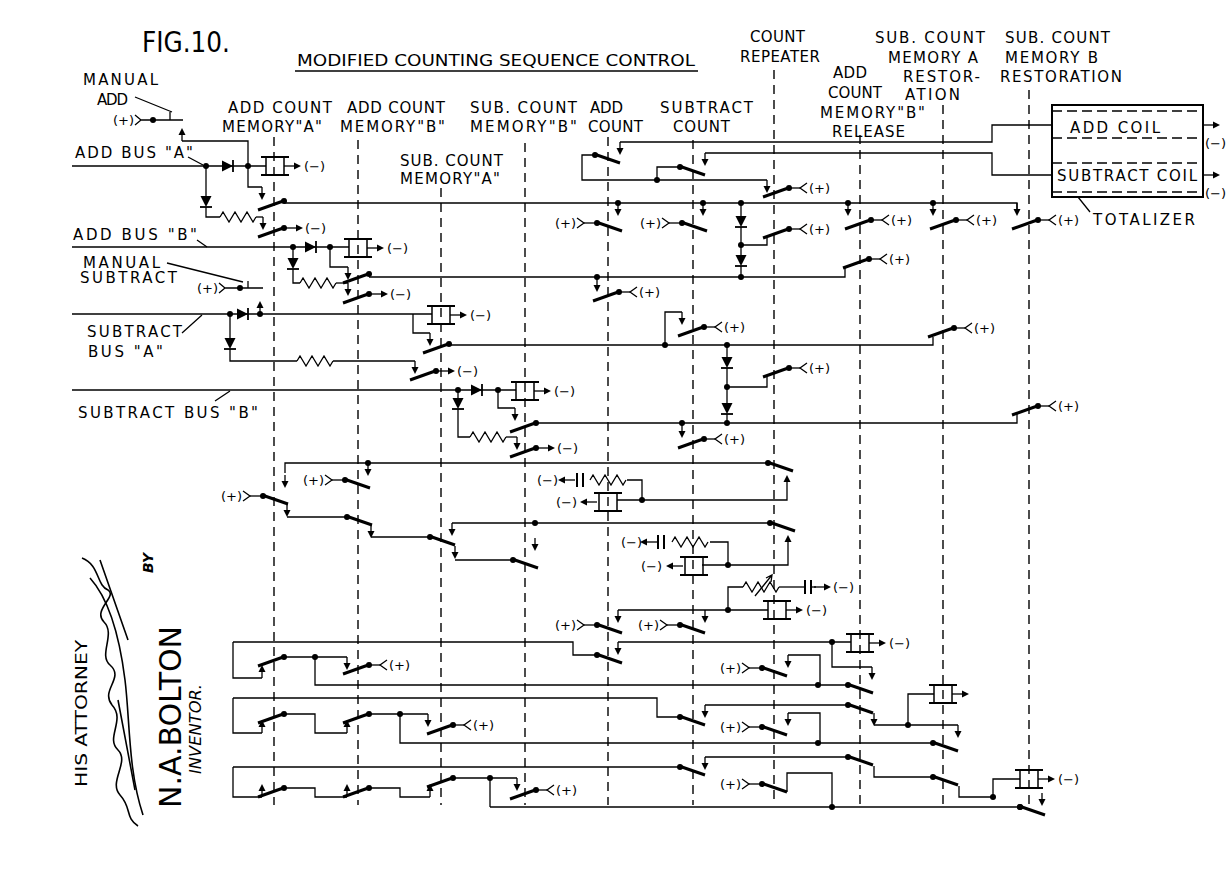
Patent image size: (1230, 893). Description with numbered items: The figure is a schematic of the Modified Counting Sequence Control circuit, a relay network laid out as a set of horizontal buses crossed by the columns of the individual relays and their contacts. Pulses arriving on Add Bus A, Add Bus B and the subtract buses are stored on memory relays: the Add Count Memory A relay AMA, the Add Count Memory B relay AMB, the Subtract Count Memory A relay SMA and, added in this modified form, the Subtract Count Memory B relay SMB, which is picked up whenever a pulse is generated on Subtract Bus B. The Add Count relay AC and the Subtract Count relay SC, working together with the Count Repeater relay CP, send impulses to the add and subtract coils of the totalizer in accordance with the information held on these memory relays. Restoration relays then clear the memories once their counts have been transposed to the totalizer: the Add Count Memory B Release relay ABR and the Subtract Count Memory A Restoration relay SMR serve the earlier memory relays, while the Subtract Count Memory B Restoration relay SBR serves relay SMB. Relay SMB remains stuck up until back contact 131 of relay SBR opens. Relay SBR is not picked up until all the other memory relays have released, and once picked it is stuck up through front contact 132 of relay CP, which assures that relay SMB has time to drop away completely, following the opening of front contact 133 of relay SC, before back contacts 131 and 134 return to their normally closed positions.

The back contact 131 is at (1012, 416).
The front contact 132 is at (776, 790).
The front contact 133 is at (676, 446).
The back contact 134 is at (780, 381).
The Add Count Memory A relay AMA is at (289, 177).
The Add Count Memory B relay AMB is at (376, 237).
The Subtract Count Memory A relay SMA is at (459, 306).
The Subtract Count Memory B relay SMB is at (541, 380).
The Add Count relay AC is at (624, 504).
The Subtract Count relay SC is at (680, 570).
The Count Repeater relay CP is at (765, 613).
The Add Count Memory B Release relay ABR is at (877, 630).
The Subtract Count Memory A Restoration relay SMR is at (960, 681).
The Subtract Count Memory B Restoration relay SBR is at (1047, 766).